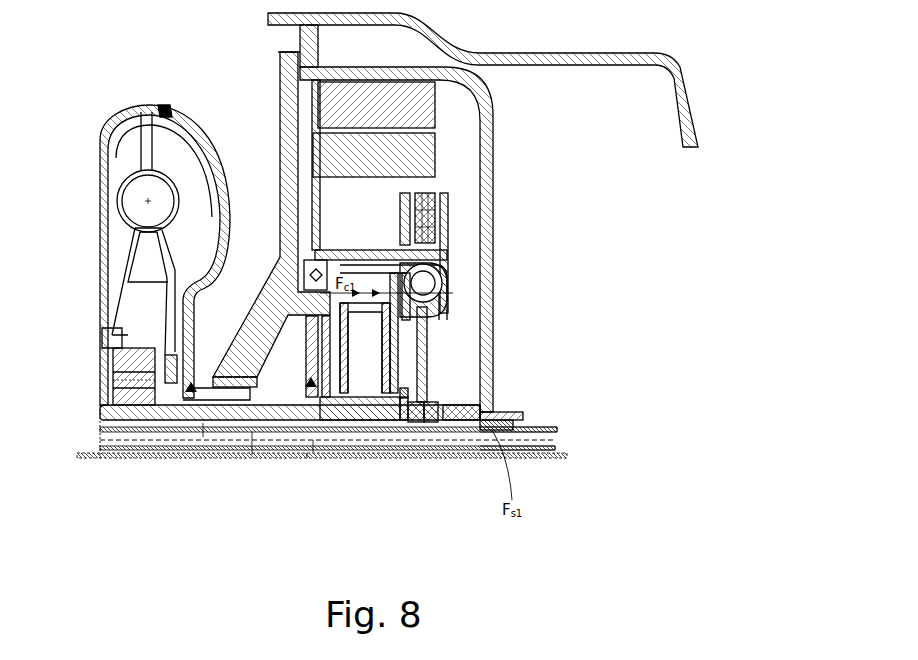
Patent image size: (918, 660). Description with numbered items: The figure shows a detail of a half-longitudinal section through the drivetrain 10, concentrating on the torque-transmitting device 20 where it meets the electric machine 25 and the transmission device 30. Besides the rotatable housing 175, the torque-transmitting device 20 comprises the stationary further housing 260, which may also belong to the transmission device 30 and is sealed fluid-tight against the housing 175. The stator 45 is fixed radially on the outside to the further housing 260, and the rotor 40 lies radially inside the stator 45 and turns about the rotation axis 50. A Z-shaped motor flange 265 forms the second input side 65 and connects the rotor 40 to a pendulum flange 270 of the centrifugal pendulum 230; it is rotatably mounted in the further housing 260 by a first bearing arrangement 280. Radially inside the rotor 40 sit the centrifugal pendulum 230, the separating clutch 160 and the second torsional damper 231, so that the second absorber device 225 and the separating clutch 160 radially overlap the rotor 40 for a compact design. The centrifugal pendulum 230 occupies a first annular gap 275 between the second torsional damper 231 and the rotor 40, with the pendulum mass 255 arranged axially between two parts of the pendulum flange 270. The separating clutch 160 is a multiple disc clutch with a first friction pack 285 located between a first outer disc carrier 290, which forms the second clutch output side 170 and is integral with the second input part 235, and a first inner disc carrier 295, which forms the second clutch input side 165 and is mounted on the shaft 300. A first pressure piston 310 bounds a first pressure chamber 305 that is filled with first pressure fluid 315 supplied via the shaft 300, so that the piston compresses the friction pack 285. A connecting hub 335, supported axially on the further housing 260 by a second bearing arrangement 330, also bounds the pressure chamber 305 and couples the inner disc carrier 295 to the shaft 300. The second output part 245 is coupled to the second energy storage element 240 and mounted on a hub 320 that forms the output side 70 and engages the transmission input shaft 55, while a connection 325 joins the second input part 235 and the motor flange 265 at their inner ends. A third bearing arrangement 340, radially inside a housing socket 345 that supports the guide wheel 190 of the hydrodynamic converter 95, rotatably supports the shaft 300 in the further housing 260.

The drivetrain 10 is at (180, 472).
The torque-transmitting device 20 is at (93, 475).
The electric machine 25 is at (470, 92).
The transmission device 30 is at (548, 433).
The rotor 40 is at (423, 155).
The stator 45 is at (423, 103).
The rotation axis 50 is at (530, 462).
The transmission input shaft 55 is at (567, 443).
The second input side 65 is at (308, 187).
The output side 70 is at (433, 423).
The hydrodynamic converter 95 is at (153, 79).
The separating clutch 160 is at (361, 255).
The second clutch input side 165 is at (318, 421).
The second clutch output side 170 is at (340, 256).
The housing 175 is at (120, 107).
The guide wheel 190 is at (137, 232).
The second absorber device 225 is at (447, 278).
The centrifugal pendulum 230 is at (475, 210).
The second torsional damper 231 is at (400, 307).
The second input part 235 is at (433, 322).
The second energy storage element 240 is at (448, 300).
The second output part 245 is at (450, 421).
The pendulum mass 255 is at (435, 250).
The further housing 260 is at (610, 67).
The motor flange 265 is at (271, 165).
The pendulum flange 270 is at (470, 264).
The first annular gap 275 is at (388, 190).
The first bearing arrangement 280 is at (292, 265).
The first friction pack 285 is at (365, 348).
The first outer disc carrier 290 is at (381, 227).
The first inner disc carrier 295 is at (355, 463).
The shaft 300 is at (300, 432).
The first pressure chamber 305 is at (431, 493).
The first pressure piston 310 is at (390, 425).
The first pressure fluid 315 is at (420, 422).
The hub 320 is at (450, 474).
The connection 325 is at (470, 342).
The second bearing arrangement 330 is at (313, 392).
The connecting hub 335 is at (403, 421).
The third bearing arrangement 340 is at (290, 445).
The housing socket 345 is at (203, 445).